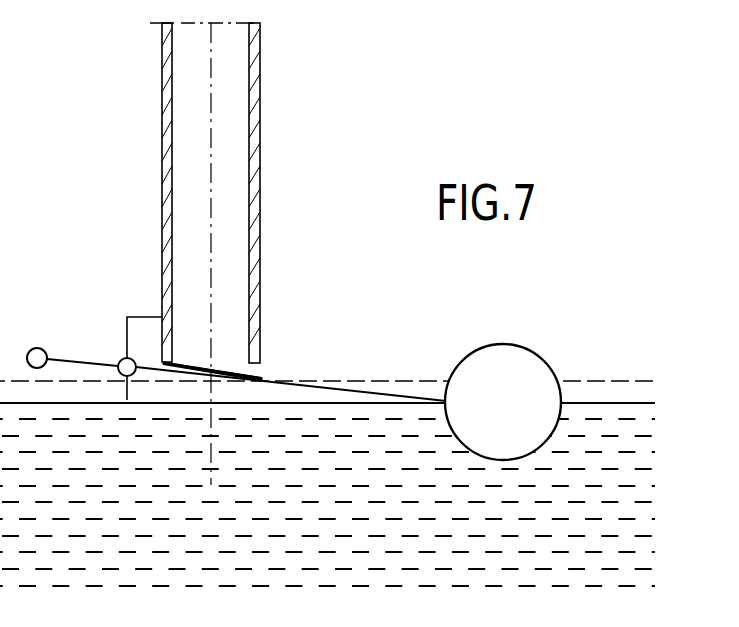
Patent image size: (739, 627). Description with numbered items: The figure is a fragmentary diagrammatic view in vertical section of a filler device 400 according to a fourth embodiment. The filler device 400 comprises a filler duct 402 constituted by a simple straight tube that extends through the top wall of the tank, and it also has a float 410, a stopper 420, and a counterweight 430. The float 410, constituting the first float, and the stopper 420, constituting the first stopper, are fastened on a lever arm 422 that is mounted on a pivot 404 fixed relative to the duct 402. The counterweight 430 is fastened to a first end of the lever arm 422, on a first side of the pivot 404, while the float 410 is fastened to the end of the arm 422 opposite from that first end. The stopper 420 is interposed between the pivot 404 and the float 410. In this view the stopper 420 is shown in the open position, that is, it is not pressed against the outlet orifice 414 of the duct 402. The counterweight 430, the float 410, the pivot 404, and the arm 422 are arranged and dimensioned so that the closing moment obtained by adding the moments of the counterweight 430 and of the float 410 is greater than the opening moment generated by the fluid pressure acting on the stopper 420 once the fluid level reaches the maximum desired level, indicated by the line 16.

The filler device 400 is at (292, 249).
The filler duct 402 is at (278, 168).
The pivot 404 is at (118, 361).
The float 410 is at (523, 413).
The outlet orifice 414 is at (233, 361).
The stopper 420 is at (261, 377).
The lever arm 422 is at (373, 389).
The counterweight 430 is at (40, 350).
The line 16 is at (613, 378).